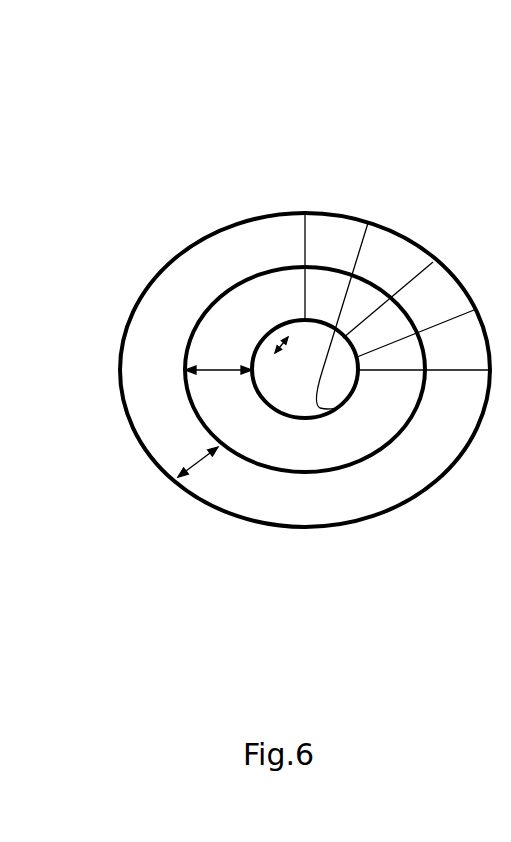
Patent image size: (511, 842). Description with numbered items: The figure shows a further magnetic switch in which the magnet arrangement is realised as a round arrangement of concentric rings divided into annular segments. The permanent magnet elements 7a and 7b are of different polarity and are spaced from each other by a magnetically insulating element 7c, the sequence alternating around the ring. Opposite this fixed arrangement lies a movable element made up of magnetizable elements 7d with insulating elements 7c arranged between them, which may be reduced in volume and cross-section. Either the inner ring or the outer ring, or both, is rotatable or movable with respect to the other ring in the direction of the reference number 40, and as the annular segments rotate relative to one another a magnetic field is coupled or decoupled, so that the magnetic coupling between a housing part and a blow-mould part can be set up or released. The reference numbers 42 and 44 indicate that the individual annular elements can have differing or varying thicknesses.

The permanent magnet element 7a is at (295, 237).
The permanent magnet element 7b is at (420, 271).
The magnetically insulating element 7c is at (303, 580).
The magnetizable element 7d is at (318, 404).
The direction of rotation 40 is at (189, 284).
The thickness of annular element 42 is at (145, 469).
The thickness of annular element 44 is at (182, 557).